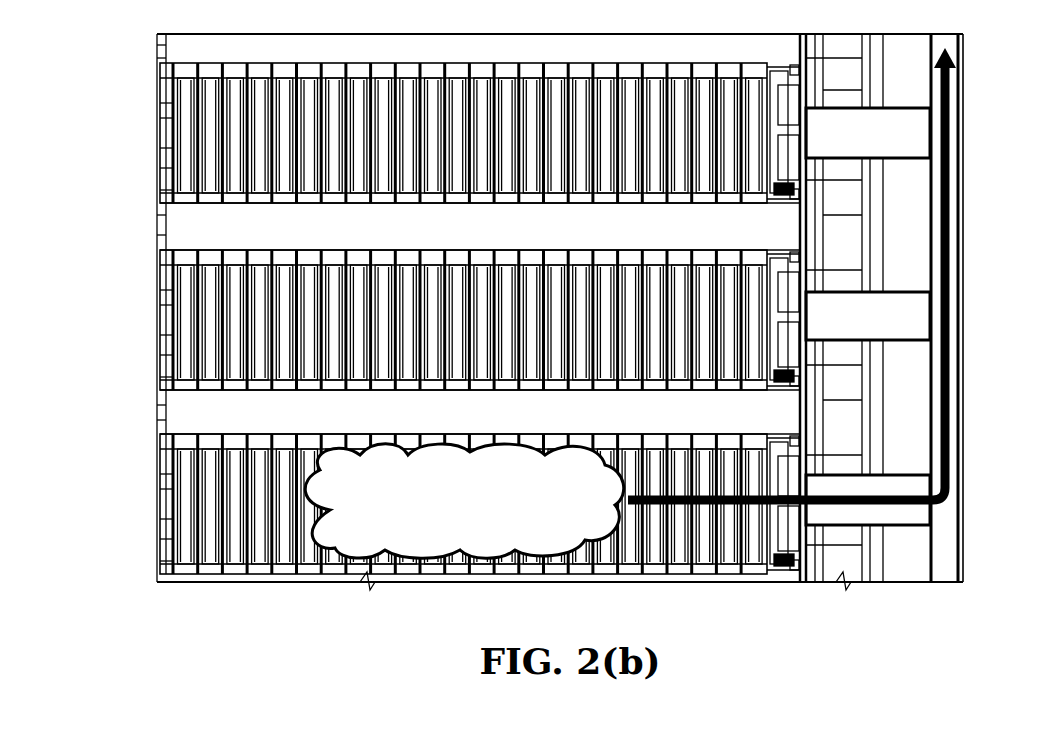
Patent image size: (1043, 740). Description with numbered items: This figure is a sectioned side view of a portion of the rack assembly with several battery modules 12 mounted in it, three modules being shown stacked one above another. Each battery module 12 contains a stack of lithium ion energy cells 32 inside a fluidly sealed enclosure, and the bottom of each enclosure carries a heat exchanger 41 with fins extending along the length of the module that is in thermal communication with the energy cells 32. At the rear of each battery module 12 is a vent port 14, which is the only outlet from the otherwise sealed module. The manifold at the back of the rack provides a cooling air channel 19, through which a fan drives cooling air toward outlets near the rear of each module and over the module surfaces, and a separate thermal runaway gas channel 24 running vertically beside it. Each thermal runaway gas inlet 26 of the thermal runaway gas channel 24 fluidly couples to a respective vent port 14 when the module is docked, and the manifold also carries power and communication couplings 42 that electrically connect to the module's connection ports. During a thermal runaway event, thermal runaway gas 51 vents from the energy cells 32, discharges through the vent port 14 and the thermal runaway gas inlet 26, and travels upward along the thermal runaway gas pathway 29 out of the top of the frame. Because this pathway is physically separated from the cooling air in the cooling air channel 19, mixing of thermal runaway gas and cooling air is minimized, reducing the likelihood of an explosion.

The battery module 12 is at (175, 172).
The vent port 14 is at (800, 313).
The cooling air channel 19 is at (908, 257).
The thermal runaway gas channel 24 is at (947, 537).
The thermal runaway gas inlet 26 is at (913, 130).
The thermal runaway gas pathway 29 is at (945, 378).
The lithium ion energy cells 32 is at (185, 280).
The heat exchanger 41 is at (185, 228).
The power and communication couplings 42 is at (820, 262).
The thermal runaway gas 51 is at (464, 501).